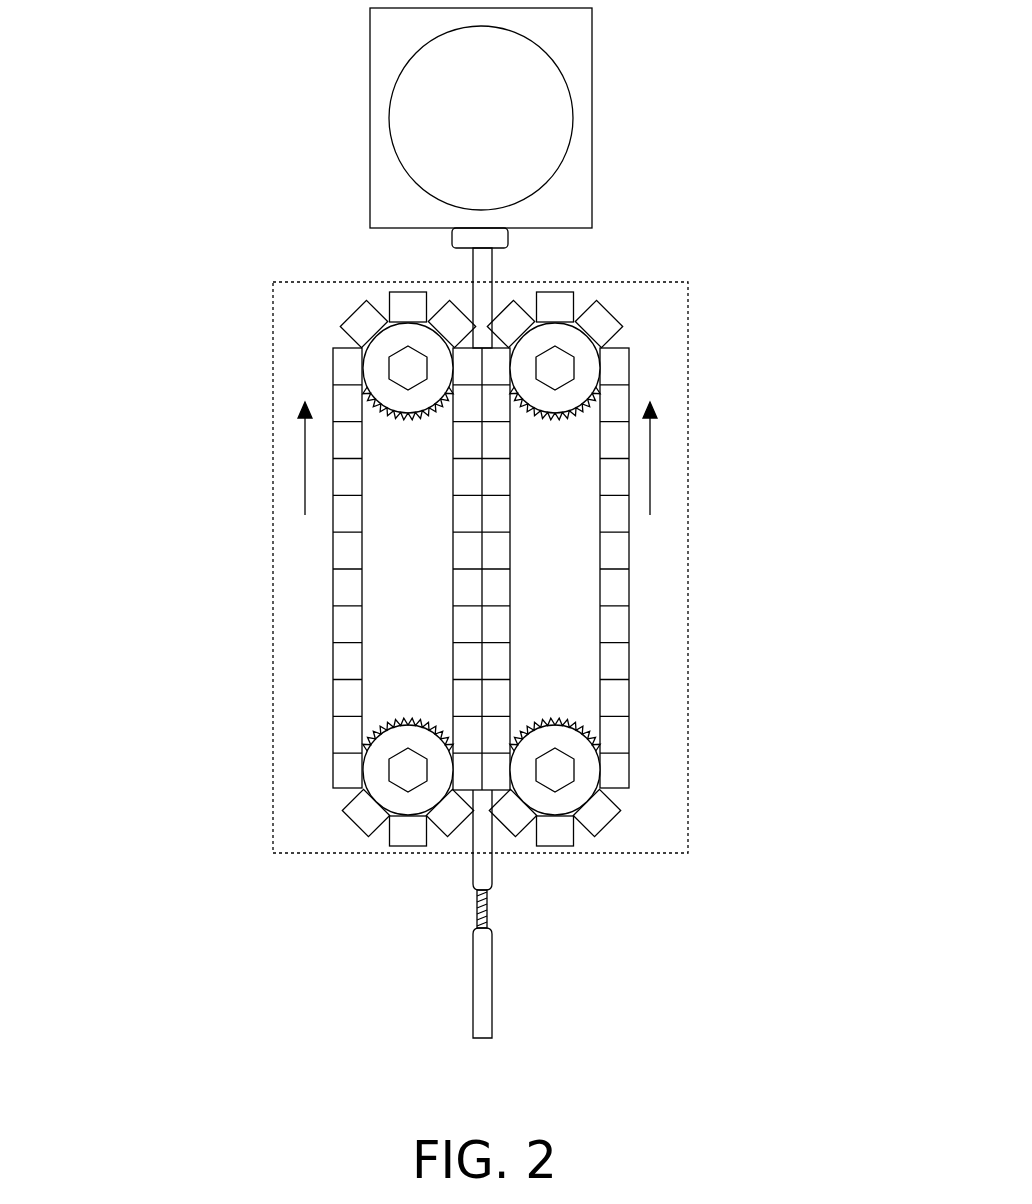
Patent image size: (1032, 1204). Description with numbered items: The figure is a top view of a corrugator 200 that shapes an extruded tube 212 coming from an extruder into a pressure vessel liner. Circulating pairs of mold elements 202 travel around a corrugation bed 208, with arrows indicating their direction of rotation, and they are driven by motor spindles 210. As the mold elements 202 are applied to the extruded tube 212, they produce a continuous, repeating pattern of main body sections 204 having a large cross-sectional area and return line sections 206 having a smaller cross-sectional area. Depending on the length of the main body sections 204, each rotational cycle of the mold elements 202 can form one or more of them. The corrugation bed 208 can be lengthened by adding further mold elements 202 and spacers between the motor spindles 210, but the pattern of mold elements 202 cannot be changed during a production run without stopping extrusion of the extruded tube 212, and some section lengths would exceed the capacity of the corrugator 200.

The corrugator 200 is at (156, 139).
The mold elements 202 is at (457, 663).
The main body sections 204 is at (492, 1002).
The return line sections 206 is at (478, 910).
The corrugation bed 208 is at (740, 288).
The motor spindles 210 is at (408, 368).
The extruded tube 212 is at (493, 280).